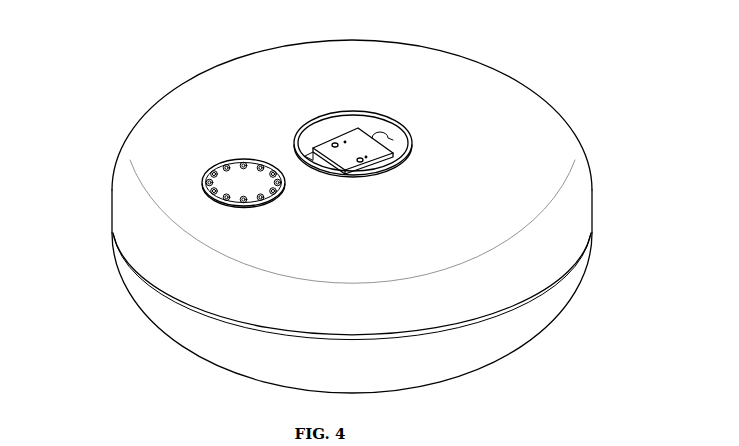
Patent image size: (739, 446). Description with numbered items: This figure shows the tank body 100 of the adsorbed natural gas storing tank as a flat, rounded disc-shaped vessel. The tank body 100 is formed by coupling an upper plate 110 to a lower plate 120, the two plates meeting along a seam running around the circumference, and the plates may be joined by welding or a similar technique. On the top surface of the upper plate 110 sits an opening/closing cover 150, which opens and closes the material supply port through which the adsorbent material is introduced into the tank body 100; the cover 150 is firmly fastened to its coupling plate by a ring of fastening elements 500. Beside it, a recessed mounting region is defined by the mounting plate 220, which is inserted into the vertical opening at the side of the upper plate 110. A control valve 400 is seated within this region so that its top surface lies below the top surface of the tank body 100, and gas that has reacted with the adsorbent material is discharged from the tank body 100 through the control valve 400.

The tank body 100 is at (523, 85).
The upper plate 110 is at (120, 188).
The lower plate 120 is at (135, 288).
The opening/closing cover 150 is at (228, 180).
The mounting plate 220 is at (323, 132).
The control valve 400 is at (352, 137).
The fastening elements 500 is at (240, 162).